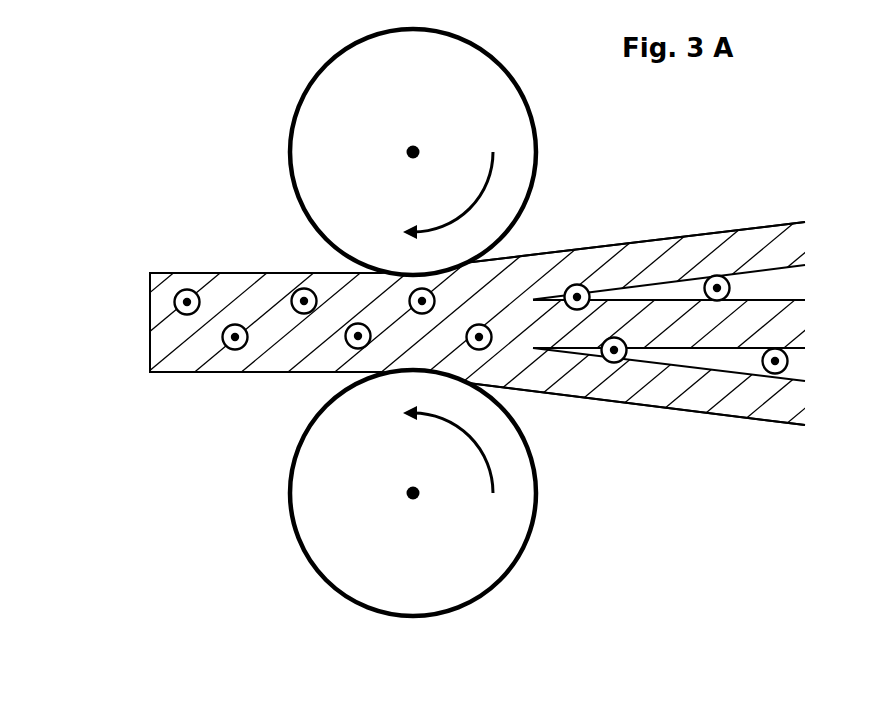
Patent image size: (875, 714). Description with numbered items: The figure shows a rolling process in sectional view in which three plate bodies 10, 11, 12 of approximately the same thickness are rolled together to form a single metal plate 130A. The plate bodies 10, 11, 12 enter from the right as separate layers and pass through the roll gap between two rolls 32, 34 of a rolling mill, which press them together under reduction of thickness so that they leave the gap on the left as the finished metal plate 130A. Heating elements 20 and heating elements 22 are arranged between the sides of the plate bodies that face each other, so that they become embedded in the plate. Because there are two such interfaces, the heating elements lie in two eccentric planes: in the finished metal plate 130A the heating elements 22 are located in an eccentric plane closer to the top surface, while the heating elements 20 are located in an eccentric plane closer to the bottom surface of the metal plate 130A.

The metal plate 130A is at (183, 386).
The plate body 10 is at (705, 240).
The plate body 11 is at (787, 330).
The plate body 12 is at (700, 403).
The heating elements 22 is at (723, 275).
The heating elements 20 is at (778, 368).
The roll 32 is at (480, 73).
The roll 34 is at (482, 560).